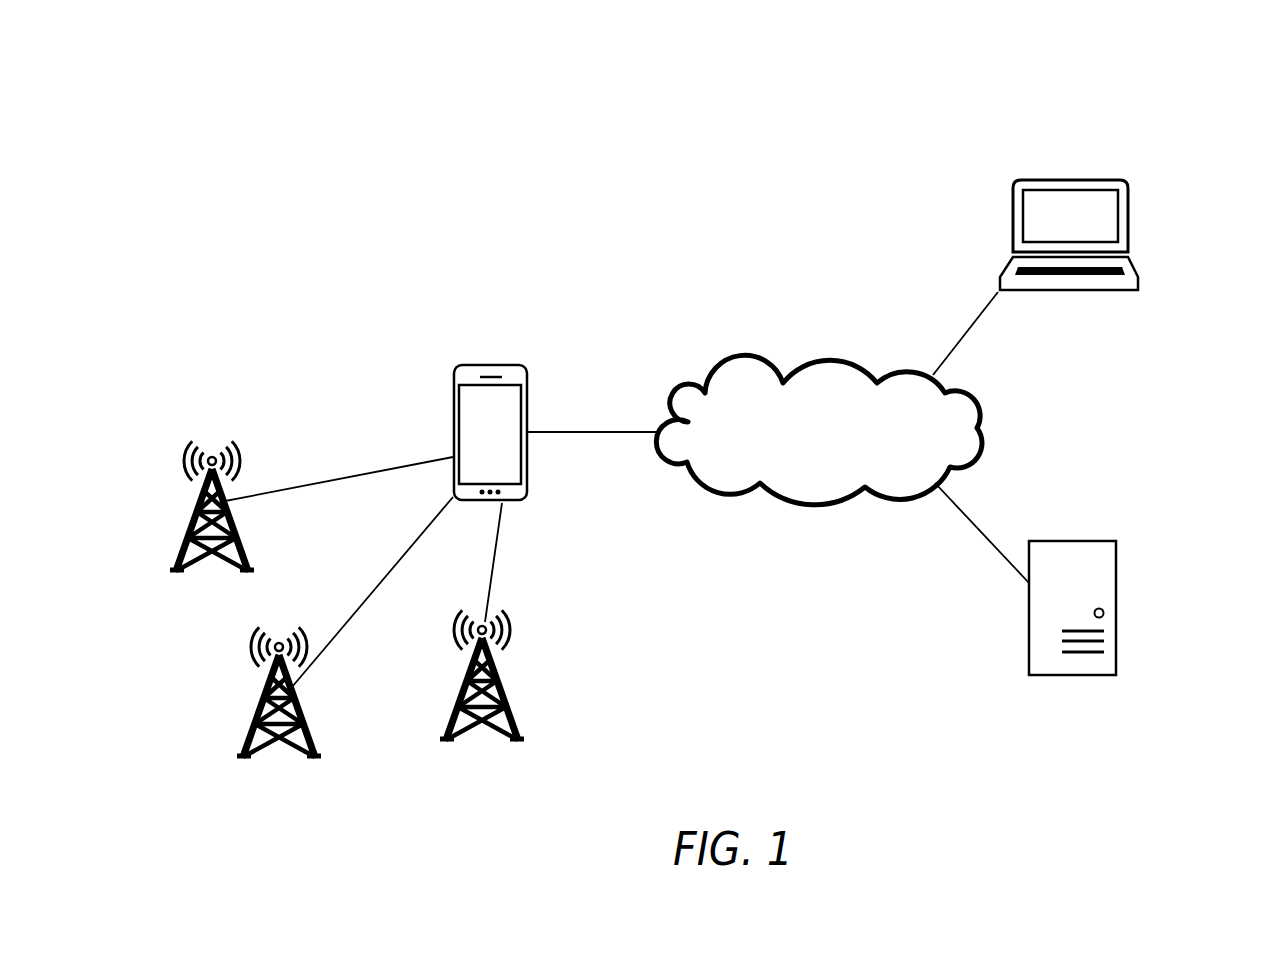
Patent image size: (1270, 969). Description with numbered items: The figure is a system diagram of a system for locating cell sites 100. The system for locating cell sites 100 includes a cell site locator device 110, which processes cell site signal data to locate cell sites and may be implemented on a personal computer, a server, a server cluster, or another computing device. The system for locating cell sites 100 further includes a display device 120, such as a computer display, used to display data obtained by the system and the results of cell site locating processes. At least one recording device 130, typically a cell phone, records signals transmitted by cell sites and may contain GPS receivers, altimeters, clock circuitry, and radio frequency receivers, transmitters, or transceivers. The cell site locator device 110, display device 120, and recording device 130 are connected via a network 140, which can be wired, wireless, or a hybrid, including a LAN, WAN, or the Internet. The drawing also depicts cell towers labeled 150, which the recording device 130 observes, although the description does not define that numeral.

The system for locating cell sites 100 is at (707, 126).
The cell site locator device 110 is at (1116, 609).
The display device 120 is at (1128, 202).
The recording device 130 is at (453, 420).
The network 140 is at (822, 362).
The base station / cell tower 150 is at (180, 568).